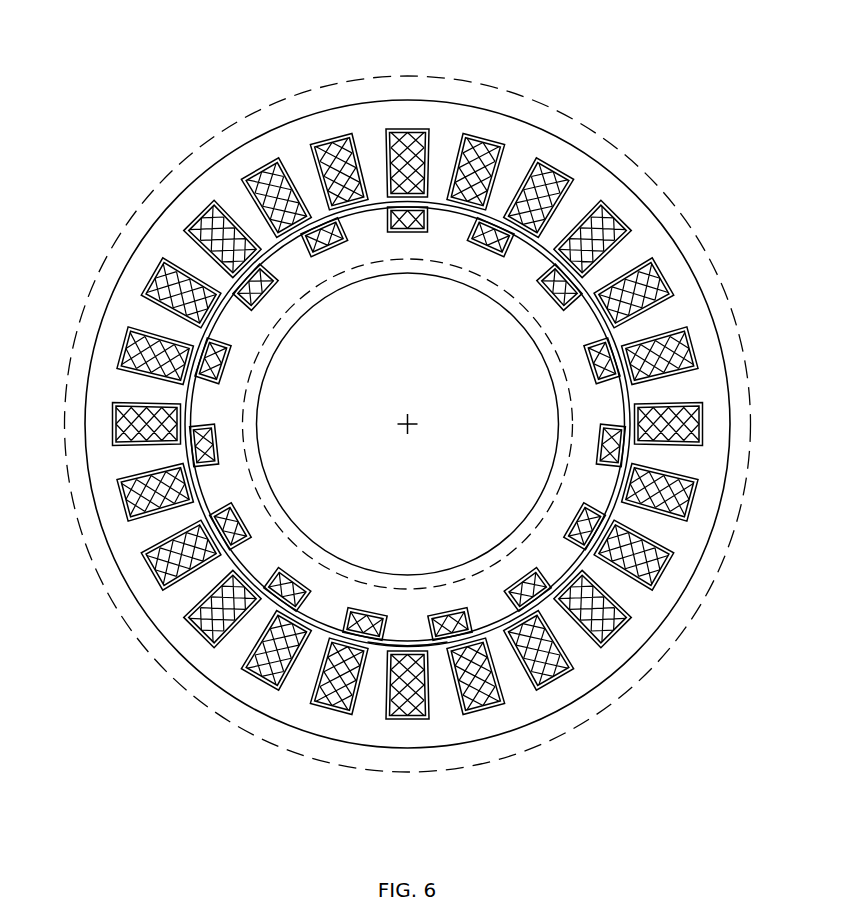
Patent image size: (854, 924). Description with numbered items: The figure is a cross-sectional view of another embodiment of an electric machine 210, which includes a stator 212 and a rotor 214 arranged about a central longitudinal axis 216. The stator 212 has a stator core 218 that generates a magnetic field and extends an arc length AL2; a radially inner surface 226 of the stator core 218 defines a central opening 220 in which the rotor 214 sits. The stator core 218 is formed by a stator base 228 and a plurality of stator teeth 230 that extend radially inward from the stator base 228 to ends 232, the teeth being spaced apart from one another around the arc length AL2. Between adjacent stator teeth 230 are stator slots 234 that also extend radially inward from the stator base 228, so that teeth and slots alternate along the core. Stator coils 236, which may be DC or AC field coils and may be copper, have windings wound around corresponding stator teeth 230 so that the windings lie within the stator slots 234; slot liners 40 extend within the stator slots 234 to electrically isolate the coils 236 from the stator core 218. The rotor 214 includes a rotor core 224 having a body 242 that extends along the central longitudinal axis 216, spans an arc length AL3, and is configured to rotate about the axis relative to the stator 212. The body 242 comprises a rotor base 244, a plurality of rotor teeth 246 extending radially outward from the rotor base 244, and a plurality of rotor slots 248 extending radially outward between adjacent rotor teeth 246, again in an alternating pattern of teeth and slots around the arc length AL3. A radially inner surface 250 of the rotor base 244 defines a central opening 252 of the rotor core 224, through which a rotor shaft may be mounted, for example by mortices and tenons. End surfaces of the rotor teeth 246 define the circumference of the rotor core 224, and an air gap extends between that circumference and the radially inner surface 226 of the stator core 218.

The electric machine 210 is at (733, 38).
The stator 212 is at (408, 417).
The rotor 214 is at (312, 464).
The central longitudinal axis 216 is at (421, 397).
The stator core 218 is at (407, 454).
The central opening 220 is at (331, 526).
The rotor core 224 is at (408, 582).
The inner surface 226 is at (364, 588).
The stator base 228 is at (407, 454).
The stator teeth 230 is at (466, 490).
The ends 232 is at (408, 423).
The stator slots 234 is at (556, 298).
The stator coils 236 is at (162, 491).
The body 242 is at (450, 552).
The rotor base 244 is at (525, 424).
The rotor teeth 246 is at (331, 433).
The rotor slots 248 is at (391, 434).
The inner surface 250 is at (408, 386).
The central opening 252 is at (317, 130).
The slot liners 40 is at (412, 441).
The arc length AL2 is at (408, 399).
The arc length AL3 is at (689, 448).